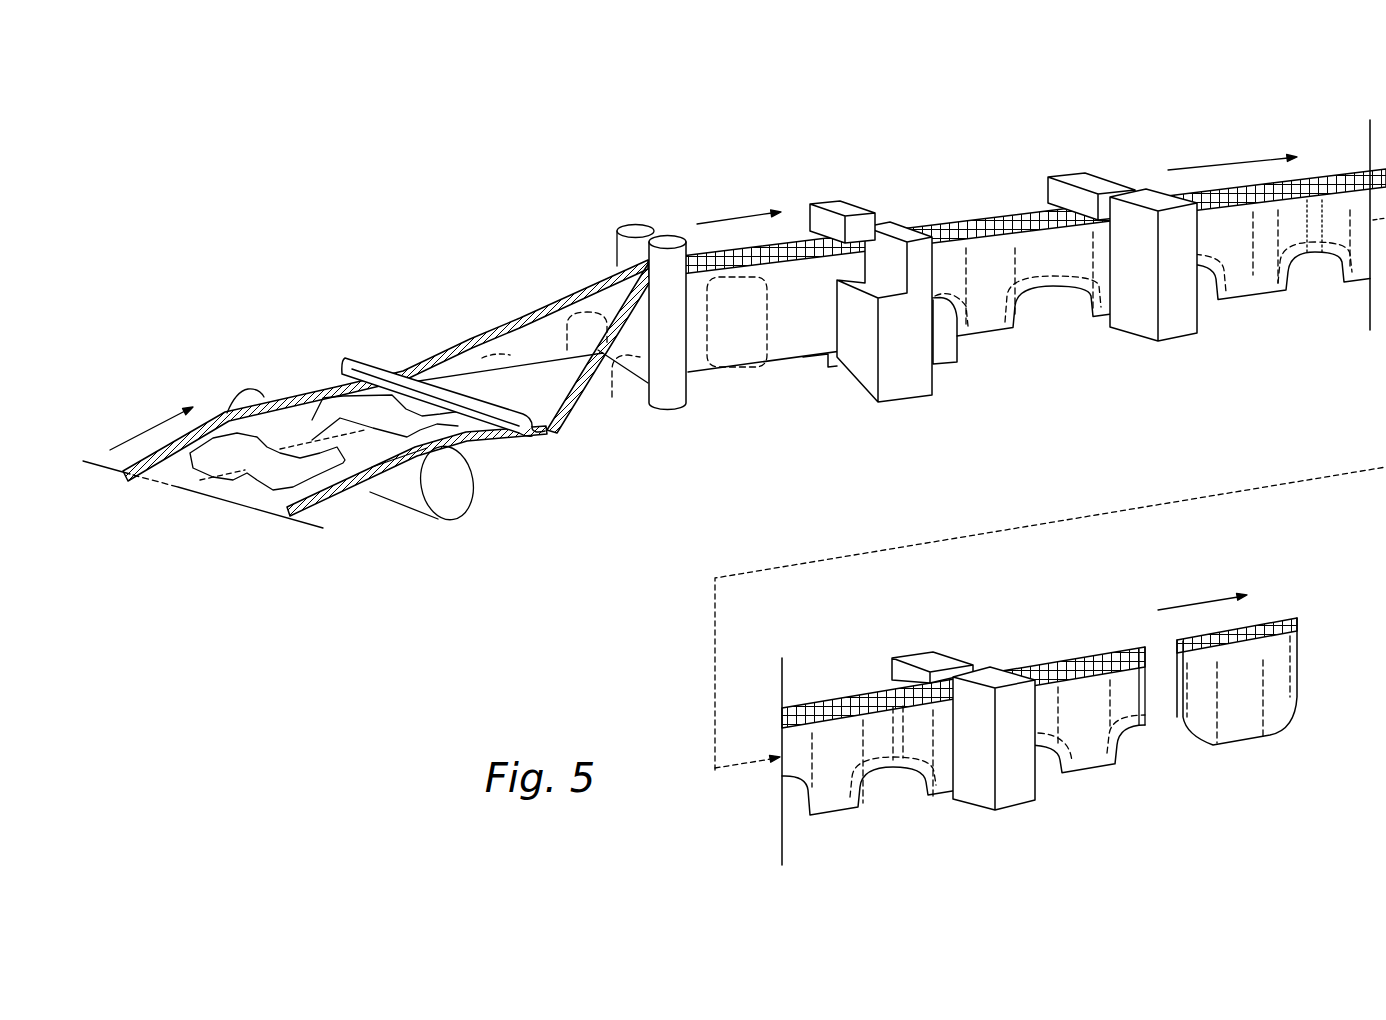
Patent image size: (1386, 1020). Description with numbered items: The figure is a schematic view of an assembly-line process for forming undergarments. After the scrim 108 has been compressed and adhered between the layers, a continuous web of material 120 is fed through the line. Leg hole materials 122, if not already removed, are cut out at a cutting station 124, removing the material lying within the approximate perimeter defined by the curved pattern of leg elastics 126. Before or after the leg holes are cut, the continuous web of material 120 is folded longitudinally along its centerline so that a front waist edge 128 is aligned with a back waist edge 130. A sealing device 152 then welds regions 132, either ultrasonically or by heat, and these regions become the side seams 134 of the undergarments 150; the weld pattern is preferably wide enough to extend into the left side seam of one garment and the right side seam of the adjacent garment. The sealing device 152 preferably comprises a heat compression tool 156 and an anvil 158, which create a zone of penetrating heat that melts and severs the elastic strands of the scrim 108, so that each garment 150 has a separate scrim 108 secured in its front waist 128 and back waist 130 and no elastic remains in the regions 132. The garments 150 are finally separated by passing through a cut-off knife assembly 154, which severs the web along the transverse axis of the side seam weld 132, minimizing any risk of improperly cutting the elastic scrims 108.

The scrim 108 is at (123, 474).
The continuous web of material 120 is at (206, 386).
The leg hole materials 122 is at (958, 358).
The cutting station 124 is at (863, 378).
The leg elastics 126 is at (1048, 300).
The front waist edge 128 is at (600, 372).
The back waist edge 130 is at (525, 315).
The weld regions 132 is at (1310, 178).
The side seams 134 is at (1303, 630).
The undergarments 150 is at (1172, 648).
The sealing device 152 is at (1096, 157).
The cut-off knife assembly 154 is at (990, 668).
The heat compression tool 156 is at (1150, 178).
The anvil 158 is at (1053, 190).